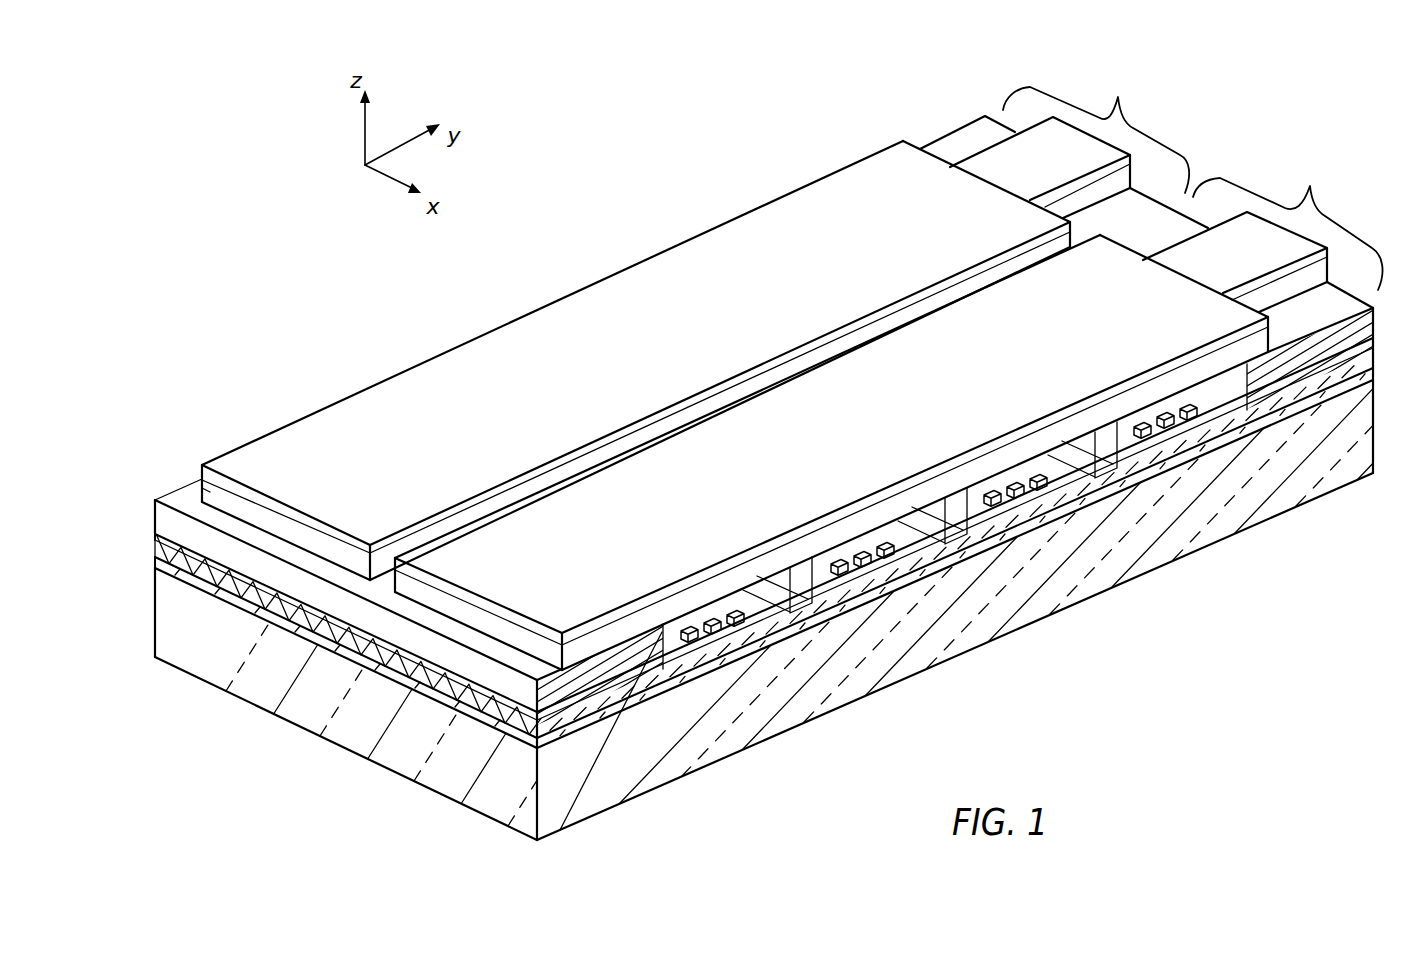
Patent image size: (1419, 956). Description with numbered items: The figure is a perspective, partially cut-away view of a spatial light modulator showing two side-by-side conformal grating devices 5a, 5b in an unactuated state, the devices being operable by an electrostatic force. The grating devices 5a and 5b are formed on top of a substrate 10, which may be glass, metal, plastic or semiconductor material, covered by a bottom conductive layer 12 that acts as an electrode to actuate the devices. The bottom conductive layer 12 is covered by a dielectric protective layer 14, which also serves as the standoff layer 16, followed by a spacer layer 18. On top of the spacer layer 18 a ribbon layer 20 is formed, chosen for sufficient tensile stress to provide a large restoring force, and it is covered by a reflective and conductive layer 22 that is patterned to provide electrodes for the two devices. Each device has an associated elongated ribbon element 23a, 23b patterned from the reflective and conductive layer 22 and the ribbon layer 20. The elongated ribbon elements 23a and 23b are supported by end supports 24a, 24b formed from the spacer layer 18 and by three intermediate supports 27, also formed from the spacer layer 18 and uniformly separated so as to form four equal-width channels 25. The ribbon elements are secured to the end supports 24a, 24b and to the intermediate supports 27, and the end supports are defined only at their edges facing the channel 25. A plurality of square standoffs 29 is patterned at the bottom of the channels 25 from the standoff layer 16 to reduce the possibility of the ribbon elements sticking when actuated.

The conformal grating device 5a is at (1096, 129).
The conformal grating device 5b is at (1288, 221).
The substrate 10 is at (403, 753).
The bottom conductive layer 12 is at (153, 637).
The protective layer 14 is at (212, 592).
The standoff layer 16 is at (265, 607).
The spacer layer 18 is at (493, 677).
The ribbon layer 20 is at (207, 490).
The reflective and conductive layer 22 is at (225, 478).
The elongated ribbon element 23a is at (780, 273).
The elongated ribbon element 23b is at (925, 403).
The end support 24a is at (1318, 350).
The end support 24b is at (617, 660).
The channel 25 is at (722, 642).
The intermediate supports 27 is at (800, 588).
The standoffs 29 is at (1040, 492).